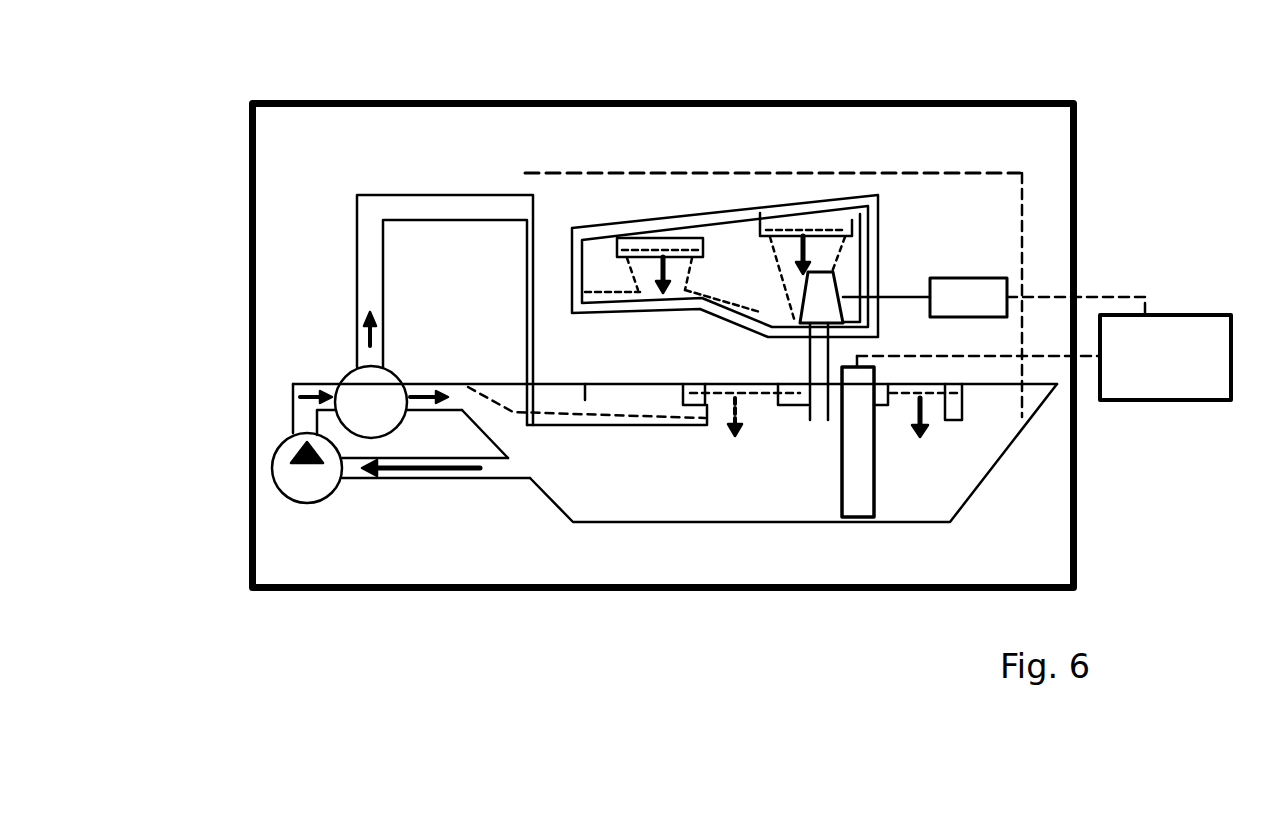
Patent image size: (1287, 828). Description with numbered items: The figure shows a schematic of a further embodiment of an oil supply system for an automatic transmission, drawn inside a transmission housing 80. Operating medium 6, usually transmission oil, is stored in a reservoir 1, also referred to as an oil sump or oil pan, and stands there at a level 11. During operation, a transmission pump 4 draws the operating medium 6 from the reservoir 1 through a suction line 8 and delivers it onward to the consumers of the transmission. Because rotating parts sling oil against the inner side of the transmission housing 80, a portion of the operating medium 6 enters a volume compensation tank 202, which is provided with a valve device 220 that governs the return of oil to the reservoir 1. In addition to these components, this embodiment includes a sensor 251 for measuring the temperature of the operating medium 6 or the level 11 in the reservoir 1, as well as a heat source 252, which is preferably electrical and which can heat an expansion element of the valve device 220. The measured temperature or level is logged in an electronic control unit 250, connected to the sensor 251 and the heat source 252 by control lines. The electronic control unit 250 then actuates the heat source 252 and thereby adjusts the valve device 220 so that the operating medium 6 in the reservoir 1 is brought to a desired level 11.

The reservoir 1 is at (1026, 497).
The transmission pump 4 is at (292, 478).
The operating medium 6 is at (640, 423).
The suction line 8 is at (467, 480).
The level 11 is at (583, 395).
The transmission housing 80 is at (236, 168).
The volume compensation tank 202 is at (904, 233).
The valve device 220 is at (854, 275).
The electronic control unit 250 is at (1190, 345).
The sensor 251 is at (853, 470).
The heat source 252 is at (978, 298).